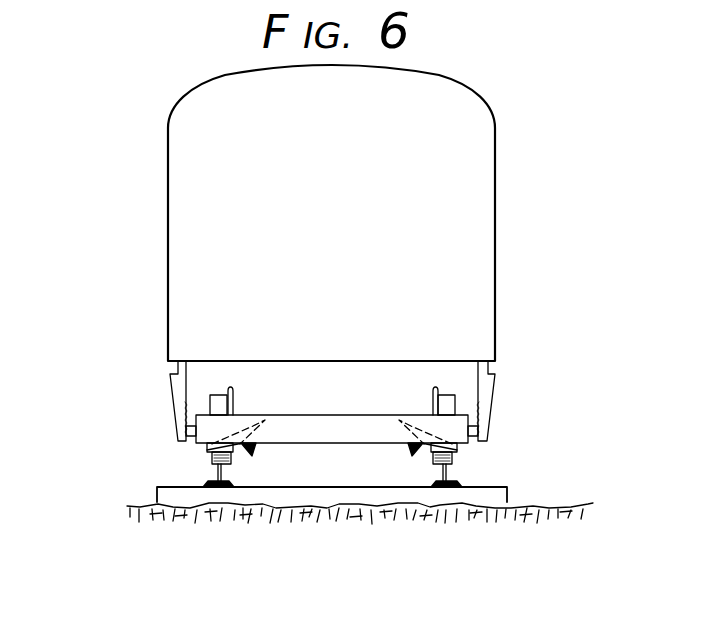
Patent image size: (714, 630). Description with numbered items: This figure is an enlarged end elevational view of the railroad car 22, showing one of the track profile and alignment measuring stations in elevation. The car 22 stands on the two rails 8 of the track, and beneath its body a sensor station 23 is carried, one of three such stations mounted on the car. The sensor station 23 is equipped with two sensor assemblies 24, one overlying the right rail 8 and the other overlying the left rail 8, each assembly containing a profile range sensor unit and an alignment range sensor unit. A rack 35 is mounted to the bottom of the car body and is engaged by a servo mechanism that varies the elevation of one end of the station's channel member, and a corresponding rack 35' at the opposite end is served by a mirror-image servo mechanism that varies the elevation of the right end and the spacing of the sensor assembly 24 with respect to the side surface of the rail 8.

The railroad car 22 is at (162, 232).
The rack 35 is at (147, 401).
The rack 35' is at (519, 401).
The sensor station 23 is at (302, 403).
The sensor assembly 24 is at (248, 455).
The rail 8 is at (205, 476).